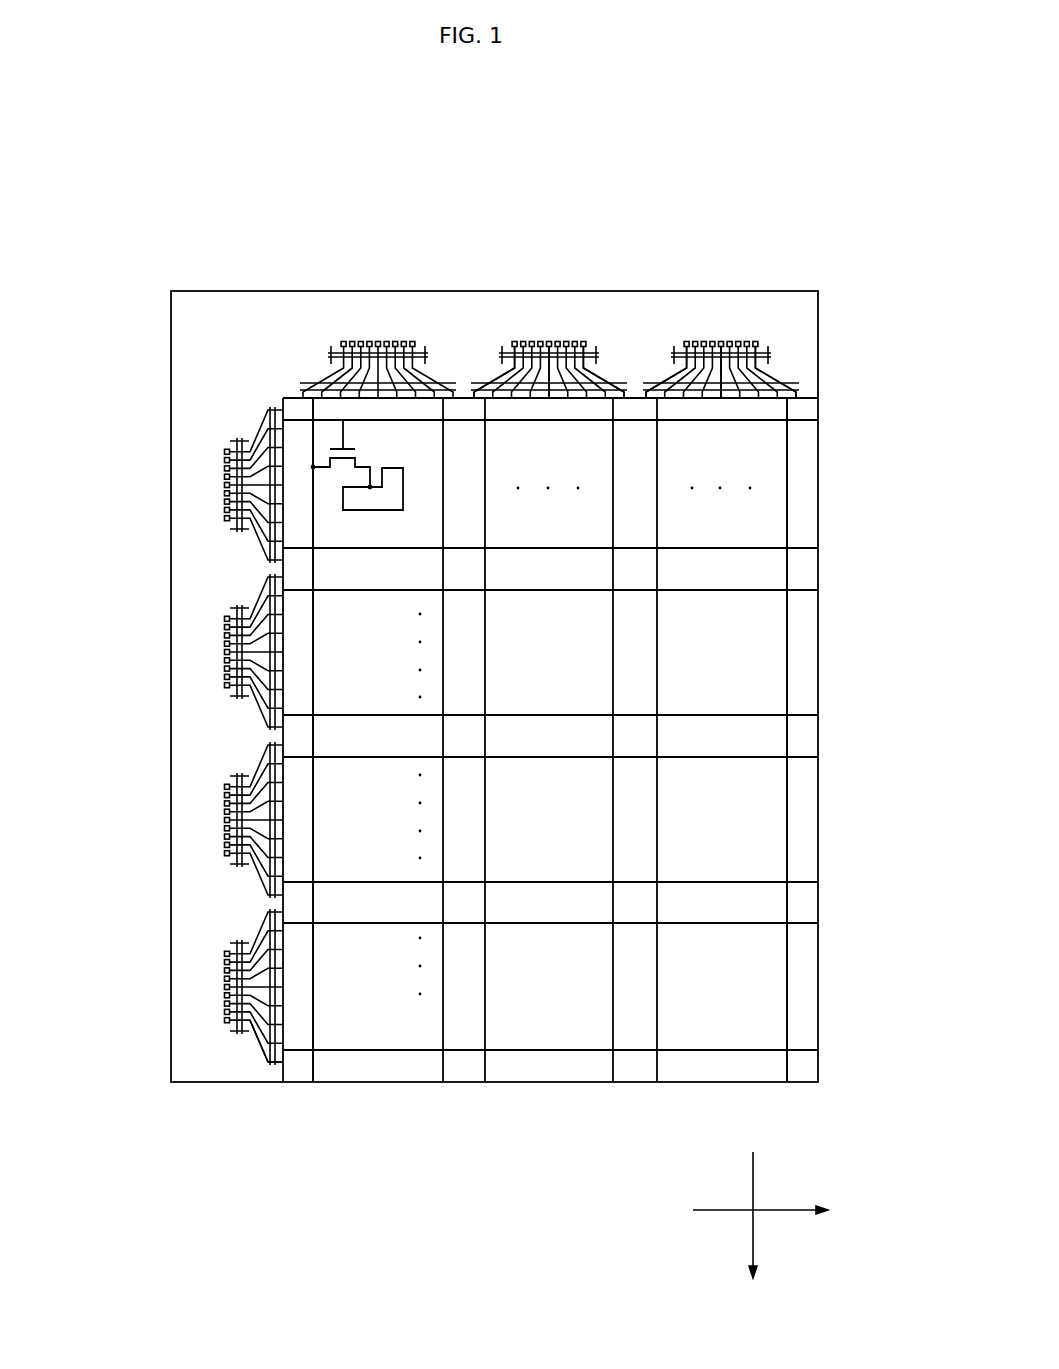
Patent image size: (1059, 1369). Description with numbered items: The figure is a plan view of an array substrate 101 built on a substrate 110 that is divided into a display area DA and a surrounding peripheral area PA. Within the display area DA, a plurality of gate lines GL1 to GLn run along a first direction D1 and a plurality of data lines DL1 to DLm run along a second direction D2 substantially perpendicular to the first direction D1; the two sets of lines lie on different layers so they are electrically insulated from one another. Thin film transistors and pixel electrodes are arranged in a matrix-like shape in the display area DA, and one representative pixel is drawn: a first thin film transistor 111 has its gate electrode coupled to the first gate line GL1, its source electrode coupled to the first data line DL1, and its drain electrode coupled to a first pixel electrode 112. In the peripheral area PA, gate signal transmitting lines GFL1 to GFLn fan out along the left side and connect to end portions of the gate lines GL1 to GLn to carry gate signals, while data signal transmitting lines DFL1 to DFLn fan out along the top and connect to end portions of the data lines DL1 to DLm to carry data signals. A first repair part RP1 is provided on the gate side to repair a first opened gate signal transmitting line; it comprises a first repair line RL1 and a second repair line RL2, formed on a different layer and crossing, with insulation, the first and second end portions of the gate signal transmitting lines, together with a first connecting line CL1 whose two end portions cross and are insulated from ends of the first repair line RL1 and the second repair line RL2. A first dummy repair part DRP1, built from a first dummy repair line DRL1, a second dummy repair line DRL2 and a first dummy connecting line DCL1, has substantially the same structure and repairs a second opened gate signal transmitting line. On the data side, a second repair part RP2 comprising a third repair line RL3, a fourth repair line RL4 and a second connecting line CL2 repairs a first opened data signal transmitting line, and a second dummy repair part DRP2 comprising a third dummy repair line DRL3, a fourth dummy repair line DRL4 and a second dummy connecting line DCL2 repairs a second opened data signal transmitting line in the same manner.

The array substrate 101 is at (463, 127).
The substrate 110 is at (407, 291).
The first thin film transistor 111 is at (360, 448).
The first pixel electrode 112 is at (404, 497).
The display area DA is at (735, 831).
The peripheral area PA is at (203, 999).
The first gate line GL1 is at (546, 422).
The n-th gate line GLn is at (548, 1048).
The first data line DL1 is at (313, 531).
The m-th data line DLm is at (786, 528).
The first data signal transmitting line DFL1 is at (326, 378).
The n-th data signal transmitting line DFLn is at (768, 383).
The first gate signal transmitting line GFL1 is at (263, 441).
The n-th gate signal transmitting line GFLn is at (258, 1038).
The first repair part RP1 is at (98, 618).
The second repair part RP2 is at (488, 233).
The first dummy repair part DRP1 is at (93, 778).
The second dummy repair part DRP2 is at (795, 233).
The first connecting line CL1 is at (262, 610).
The second connecting line CL2 is at (598, 384).
The first repair line RL1 is at (235, 657).
The second repair line RL2 is at (262, 692).
The third repair line RL3 is at (556, 345).
The fourth repair line RL4 is at (500, 384).
The first dummy connecting line DCL1 is at (262, 855).
The second dummy connecting line DCL2 is at (660, 384).
The first dummy repair line DRL1 is at (235, 818).
The second dummy repair line DRL2 is at (262, 775).
The third dummy repair line DRL3 is at (728, 345).
The fourth dummy repair line DRL4 is at (783, 384).
The first direction D1 is at (778, 1211).
The second direction D2 is at (752, 1232).